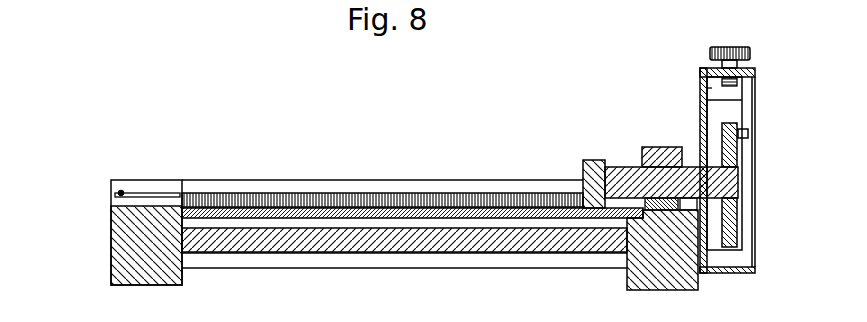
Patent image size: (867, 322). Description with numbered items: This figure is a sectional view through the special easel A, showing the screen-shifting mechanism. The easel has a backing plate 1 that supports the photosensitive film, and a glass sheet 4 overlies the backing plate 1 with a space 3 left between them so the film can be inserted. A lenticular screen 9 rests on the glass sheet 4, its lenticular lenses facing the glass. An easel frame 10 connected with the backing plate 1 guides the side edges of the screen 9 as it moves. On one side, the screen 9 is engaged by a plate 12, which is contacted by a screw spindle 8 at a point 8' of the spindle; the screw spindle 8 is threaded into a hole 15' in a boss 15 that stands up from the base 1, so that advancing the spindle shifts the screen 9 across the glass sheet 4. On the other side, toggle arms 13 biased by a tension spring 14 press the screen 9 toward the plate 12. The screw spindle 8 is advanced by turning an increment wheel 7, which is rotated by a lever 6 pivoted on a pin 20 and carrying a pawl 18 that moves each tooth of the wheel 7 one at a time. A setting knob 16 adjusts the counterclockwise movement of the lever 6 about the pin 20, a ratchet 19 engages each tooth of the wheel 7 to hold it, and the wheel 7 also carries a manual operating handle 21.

The backing plate 1 is at (422, 256).
The space 3 is at (350, 227).
The glass sheet 4 is at (273, 210).
The lever 6 is at (703, 113).
The increment wheel 7 is at (730, 231).
The screw spindle 8 is at (671, 166).
The point of screw spindle 8' is at (614, 126).
The lenticular screen 9 is at (313, 195).
The easel frame 10 is at (128, 236).
The plate 12 is at (590, 160).
The toggle arms 13 is at (133, 195).
The tension spring 14 is at (121, 191).
The boss 15 is at (662, 136).
The hole 15' is at (686, 140).
The setting knob 16 is at (722, 47).
The pawl 18 is at (745, 110).
The ratchet 19 is at (742, 212).
The pin 20 is at (715, 92).
The manual operating handle 21 is at (748, 133).
The easel A is at (417, 165).